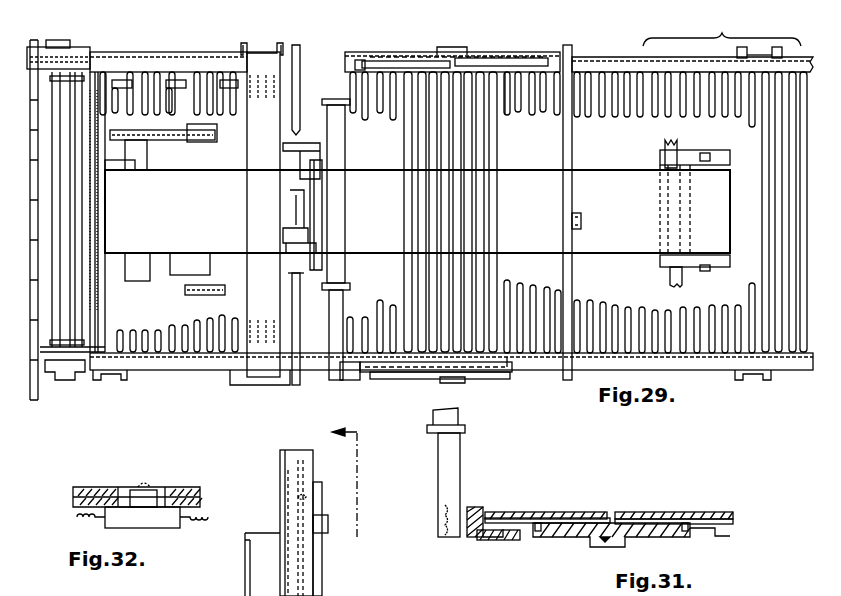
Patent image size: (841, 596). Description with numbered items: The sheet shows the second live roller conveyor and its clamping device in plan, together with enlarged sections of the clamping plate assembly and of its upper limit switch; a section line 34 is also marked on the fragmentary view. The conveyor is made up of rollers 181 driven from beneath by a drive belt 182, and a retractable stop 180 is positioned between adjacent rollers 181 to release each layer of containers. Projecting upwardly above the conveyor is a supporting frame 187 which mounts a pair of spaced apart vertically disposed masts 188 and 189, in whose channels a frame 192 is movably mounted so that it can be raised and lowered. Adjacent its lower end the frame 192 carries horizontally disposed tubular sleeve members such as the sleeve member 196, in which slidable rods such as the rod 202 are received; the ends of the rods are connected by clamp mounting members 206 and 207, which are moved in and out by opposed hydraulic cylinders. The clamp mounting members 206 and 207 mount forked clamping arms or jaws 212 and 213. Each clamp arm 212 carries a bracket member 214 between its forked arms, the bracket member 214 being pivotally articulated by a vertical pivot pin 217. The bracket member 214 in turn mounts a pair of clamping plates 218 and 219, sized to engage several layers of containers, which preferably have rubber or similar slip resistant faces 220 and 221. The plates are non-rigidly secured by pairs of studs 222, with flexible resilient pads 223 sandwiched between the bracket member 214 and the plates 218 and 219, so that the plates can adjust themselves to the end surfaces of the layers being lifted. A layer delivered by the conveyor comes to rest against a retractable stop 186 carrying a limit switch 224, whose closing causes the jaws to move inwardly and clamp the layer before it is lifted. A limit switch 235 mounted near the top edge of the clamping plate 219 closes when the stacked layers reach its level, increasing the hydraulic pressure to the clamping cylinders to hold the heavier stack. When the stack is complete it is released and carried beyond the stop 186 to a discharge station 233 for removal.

In FIG. 32, the section line 34 is at (355, 481).
In FIG. 29, the retractable stop 180 is at (292, 63).
In FIG. 29, the rollers 181 is at (163, 72).
In FIG. 29, the drive belt 182 is at (560, 175).
In FIG. 29, the retractable stop 186 is at (572, 160).
In FIG. 29, the supporting frame 187 is at (262, 48).
In FIG. 32, the supporting frame 187 is at (258, 582).
In FIG. 29, the mast 188 is at (283, 232).
In FIG. 32, the mast 188 is at (295, 470).
In FIG. 29, the mast 189 is at (283, 158).
In FIG. 29, the frame 192 is at (322, 215).
In FIG. 32, the frame 192 is at (318, 562).
In FIG. 29, the tubular sleeve member 196 is at (345, 190).
In FIG. 31, the tubular sleeve member 196 is at (465, 428).
In FIG. 29, the slidable rod 202 is at (343, 305).
In FIG. 31, the slidable rod 202 is at (458, 458).
In FIG. 29, the clamp mounting member 206 is at (345, 380).
In FIG. 29, the clamp mounting member 207 is at (365, 58).
In FIG. 29, the clamp arm 212 is at (490, 380).
In FIG. 31, the clamp arm 212 is at (500, 542).
In FIG. 29, the clamp arm 213 is at (493, 58).
In FIG. 31, the bracket member 214 is at (640, 537).
In FIG. 29, the vertical pivot pin 217 is at (477, 38).
In FIG. 31, the vertical pivot pin 217 is at (600, 548).
In FIG. 29, the clamping plate 218 is at (400, 64).
In FIG. 31, the clamping plate 218 is at (505, 517).
In FIG. 29, the clamping plate 219 is at (508, 78).
In FIG. 31, the clamping plate 219 is at (735, 518).
In FIG. 31, the slip resistant face 220 is at (540, 512).
In FIG. 31, the slip resistant face 221 is at (655, 512).
In FIG. 31, the stud 222 is at (688, 535).
In FIG. 31, the resilient pad 223 is at (720, 533).
In FIG. 29, the limit switch 224 is at (578, 212).
In FIG. 29, the discharge station 233 is at (722, 37).
In FIG. 32, the limit switch 235 is at (150, 488).